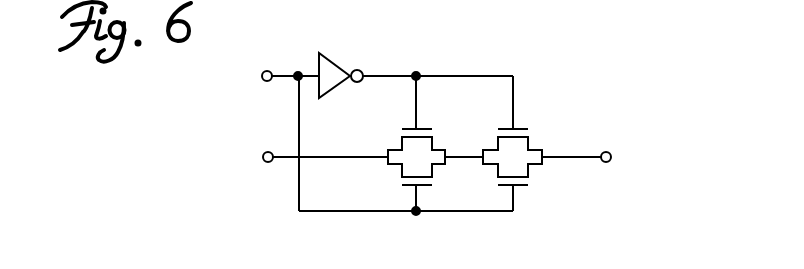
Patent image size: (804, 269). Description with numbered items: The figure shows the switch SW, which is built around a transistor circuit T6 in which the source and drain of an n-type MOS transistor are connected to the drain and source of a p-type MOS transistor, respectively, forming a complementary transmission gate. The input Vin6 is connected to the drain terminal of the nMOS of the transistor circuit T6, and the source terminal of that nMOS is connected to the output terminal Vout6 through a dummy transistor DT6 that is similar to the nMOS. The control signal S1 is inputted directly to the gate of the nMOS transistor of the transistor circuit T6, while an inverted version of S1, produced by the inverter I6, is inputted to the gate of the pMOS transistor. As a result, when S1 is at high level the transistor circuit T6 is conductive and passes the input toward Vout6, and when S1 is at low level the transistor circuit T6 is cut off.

The control signal S1 is at (249, 76).
The inverter I6 is at (341, 62).
The input terminal Vin6 is at (241, 157).
The transistor circuit T6 is at (386, 156).
The dummy transistor DT6 is at (523, 154).
The output terminal Vout6 is at (640, 157).
The switch SW is at (590, 83).